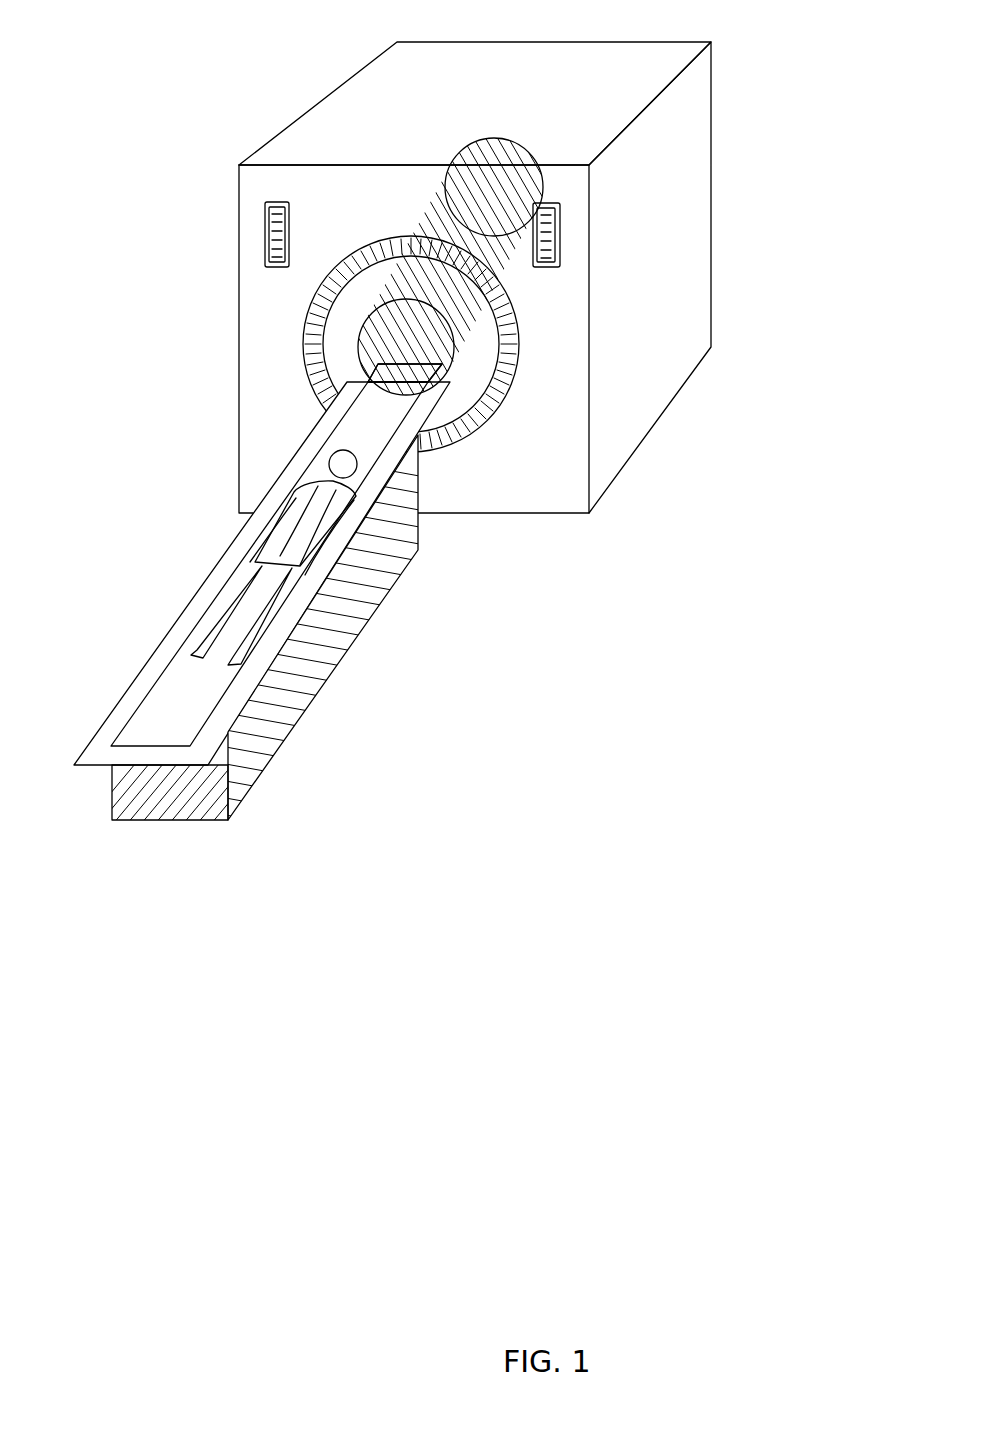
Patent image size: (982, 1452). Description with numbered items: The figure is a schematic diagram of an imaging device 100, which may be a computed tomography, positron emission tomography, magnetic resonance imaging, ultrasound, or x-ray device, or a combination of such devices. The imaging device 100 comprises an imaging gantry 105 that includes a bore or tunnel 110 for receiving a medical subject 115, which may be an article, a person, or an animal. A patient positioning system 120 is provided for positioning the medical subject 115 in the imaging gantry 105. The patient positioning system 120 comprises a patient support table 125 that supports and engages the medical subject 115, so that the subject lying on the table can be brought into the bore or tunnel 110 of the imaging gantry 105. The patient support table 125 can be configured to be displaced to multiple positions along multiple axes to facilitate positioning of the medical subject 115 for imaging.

The imaging device 100 is at (723, 215).
The imaging gantry 105 is at (660, 433).
The bore or tunnel 110 is at (358, 316).
The medical subject 115 is at (237, 586).
The patient positioning system 120 is at (374, 604).
The patient support table 125 is at (262, 672).